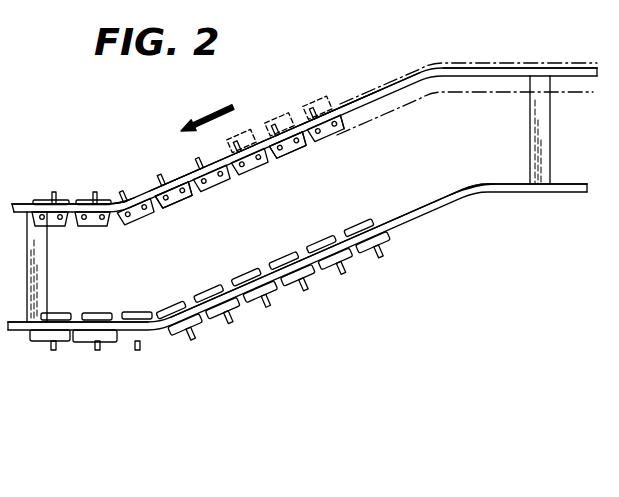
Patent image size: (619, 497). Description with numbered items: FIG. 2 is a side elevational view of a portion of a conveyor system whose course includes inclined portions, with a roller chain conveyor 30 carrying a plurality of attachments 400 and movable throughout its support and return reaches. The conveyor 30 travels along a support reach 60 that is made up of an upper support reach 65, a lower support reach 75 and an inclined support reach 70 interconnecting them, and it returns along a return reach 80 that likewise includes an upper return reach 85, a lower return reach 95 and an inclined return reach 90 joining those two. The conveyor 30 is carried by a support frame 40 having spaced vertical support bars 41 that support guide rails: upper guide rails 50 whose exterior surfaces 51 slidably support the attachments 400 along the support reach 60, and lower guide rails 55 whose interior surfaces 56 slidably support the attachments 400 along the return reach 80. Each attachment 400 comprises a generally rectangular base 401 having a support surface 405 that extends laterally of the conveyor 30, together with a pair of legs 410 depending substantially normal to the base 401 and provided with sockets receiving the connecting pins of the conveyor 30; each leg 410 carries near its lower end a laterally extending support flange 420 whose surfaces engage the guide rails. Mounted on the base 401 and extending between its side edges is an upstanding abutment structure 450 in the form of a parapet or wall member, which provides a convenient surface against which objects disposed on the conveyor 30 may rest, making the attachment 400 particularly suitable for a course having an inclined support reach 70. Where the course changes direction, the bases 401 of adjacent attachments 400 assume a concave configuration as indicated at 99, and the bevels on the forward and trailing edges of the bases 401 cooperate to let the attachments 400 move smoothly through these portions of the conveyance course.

The roller chain conveyor 30 is at (191, 195).
The support frame 40 is at (407, 111).
The vertical support bars 41 is at (551, 138).
The upper guide rails 50 is at (408, 87).
The exterior surfaces 51 is at (357, 100).
The lower guide rails 55 is at (390, 222).
The interior surfaces 56 is at (433, 193).
The support reach 60 is at (294, 69).
The upper support reach 65 is at (524, 49).
The inclined support reach 70 is at (254, 126).
The lower support reach 75 is at (71, 184).
The return reach 80 is at (327, 362).
The upper return reach 85 is at (554, 222).
The inclined return reach 90 is at (344, 309).
The lower return reach 95 is at (84, 381).
The concave configuration 99 is at (109, 199).
The attachment 400 is at (252, 179).
The base 401 is at (143, 196).
The support surface 405 is at (177, 177).
The legs 410 is at (319, 136).
The support flange 420 is at (177, 308).
The upstanding abutment structure 450 is at (200, 164).